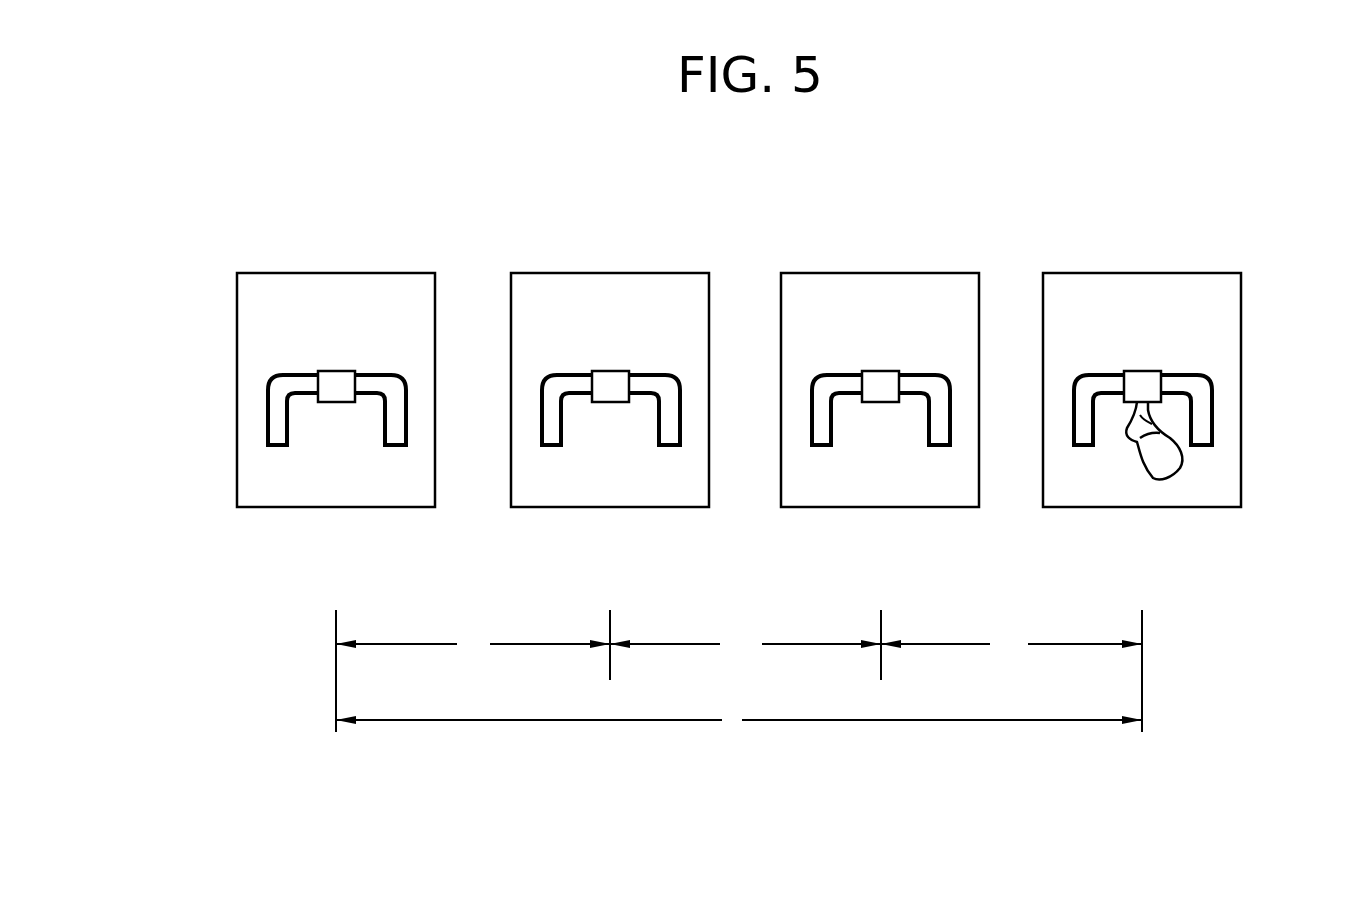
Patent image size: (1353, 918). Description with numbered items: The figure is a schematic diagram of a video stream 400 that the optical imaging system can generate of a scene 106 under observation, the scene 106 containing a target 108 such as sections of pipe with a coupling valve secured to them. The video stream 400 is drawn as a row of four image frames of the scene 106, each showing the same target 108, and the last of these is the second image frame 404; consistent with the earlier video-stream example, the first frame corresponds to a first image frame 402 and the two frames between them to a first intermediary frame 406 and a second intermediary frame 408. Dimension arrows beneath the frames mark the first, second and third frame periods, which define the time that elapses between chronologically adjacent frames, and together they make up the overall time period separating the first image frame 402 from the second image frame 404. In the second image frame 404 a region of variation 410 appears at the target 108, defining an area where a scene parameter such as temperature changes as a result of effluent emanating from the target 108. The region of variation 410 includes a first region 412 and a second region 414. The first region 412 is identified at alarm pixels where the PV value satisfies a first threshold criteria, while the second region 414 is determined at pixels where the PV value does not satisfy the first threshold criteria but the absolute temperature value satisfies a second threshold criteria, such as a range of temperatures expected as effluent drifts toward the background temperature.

The video stream 400 is at (1088, 162).
The first image 402 is at (335, 272).
The second image frame 404 is at (1140, 272).
The second image 406 is at (608, 272).
The third image 408 is at (878, 272).
The region of variation 410 is at (1205, 470).
The first region 412 is at (1142, 415).
The second region 414 is at (1148, 436).
The scene 106 is at (729, 354).
The target 108 is at (283, 470).